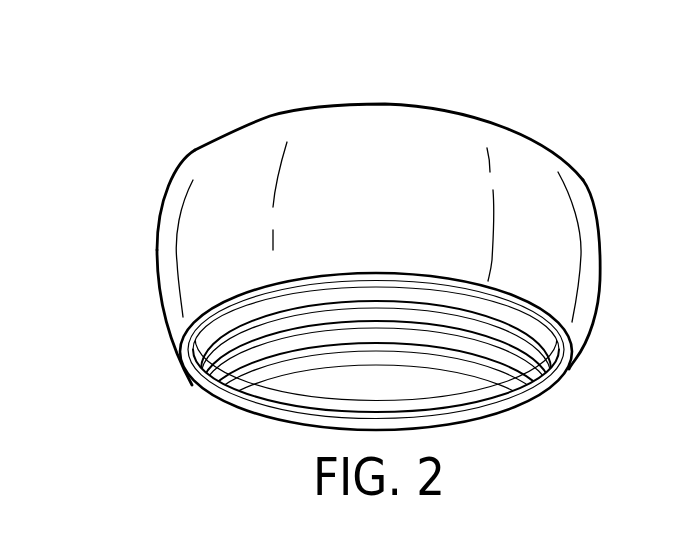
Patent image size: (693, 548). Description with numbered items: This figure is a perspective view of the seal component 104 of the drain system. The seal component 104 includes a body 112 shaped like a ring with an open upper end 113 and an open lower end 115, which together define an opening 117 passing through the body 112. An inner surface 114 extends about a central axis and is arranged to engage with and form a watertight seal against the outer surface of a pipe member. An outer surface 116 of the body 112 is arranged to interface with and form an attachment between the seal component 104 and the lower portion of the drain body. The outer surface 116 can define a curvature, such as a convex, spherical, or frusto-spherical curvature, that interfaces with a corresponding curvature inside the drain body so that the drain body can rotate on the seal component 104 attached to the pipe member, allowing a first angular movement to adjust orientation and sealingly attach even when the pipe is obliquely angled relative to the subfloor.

The seal component 104 is at (532, 120).
The body 112 is at (193, 148).
The open upper end 113 is at (386, 104).
The inner surface 114 is at (263, 370).
The open lower end 115 is at (568, 374).
The outer surface 116 is at (582, 205).
The opening 117 is at (471, 379).